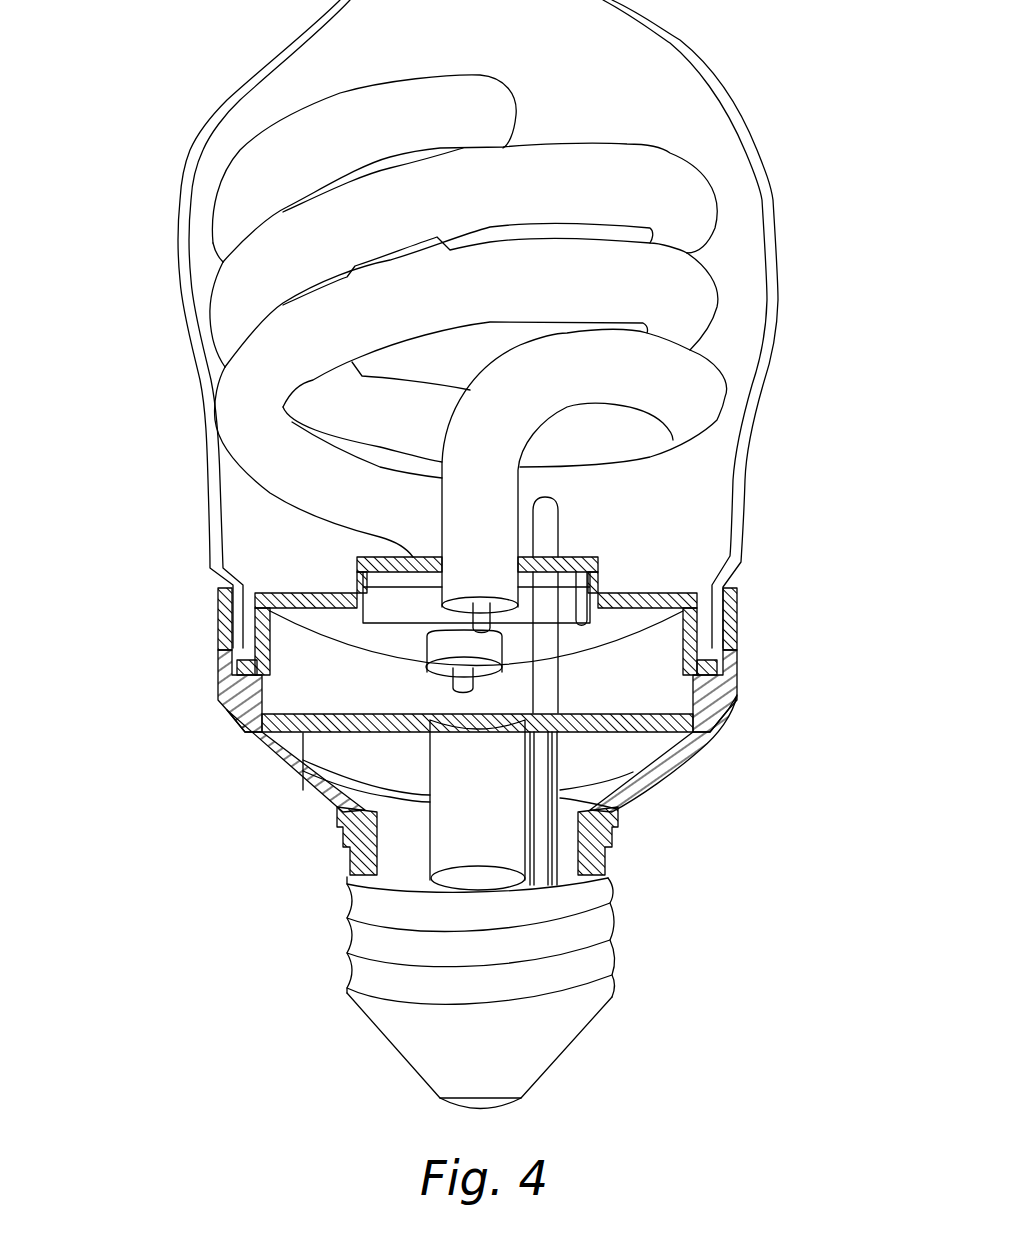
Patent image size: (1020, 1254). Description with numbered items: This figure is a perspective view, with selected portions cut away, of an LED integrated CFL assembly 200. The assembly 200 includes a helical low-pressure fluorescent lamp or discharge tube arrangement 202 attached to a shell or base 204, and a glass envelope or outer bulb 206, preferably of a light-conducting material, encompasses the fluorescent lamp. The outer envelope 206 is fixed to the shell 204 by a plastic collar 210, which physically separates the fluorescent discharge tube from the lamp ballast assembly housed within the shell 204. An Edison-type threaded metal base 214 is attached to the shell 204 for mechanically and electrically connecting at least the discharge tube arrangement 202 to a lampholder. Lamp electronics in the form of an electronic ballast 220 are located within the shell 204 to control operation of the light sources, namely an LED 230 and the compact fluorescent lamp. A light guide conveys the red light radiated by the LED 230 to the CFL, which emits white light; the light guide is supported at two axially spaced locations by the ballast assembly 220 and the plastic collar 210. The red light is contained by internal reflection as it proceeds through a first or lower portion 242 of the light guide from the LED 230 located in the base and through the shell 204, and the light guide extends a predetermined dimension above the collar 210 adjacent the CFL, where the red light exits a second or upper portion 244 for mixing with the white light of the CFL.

The LED integrated CFL assembly 200 is at (116, 261).
The helical low-pressure fluorescent lamp or discharge tube arrangement 202 is at (720, 412).
The shell or base 204 is at (232, 702).
The glass envelope or outer bulb 206 is at (752, 134).
The plastic collar 210 is at (300, 590).
The Edison-type threaded metal base 214 is at (363, 932).
The electronic ballast 220 is at (302, 795).
The LED 230 is at (608, 878).
The first or lower portion of the light guide 242 is at (633, 803).
The second or upper portion of the light guide 244 is at (558, 513).